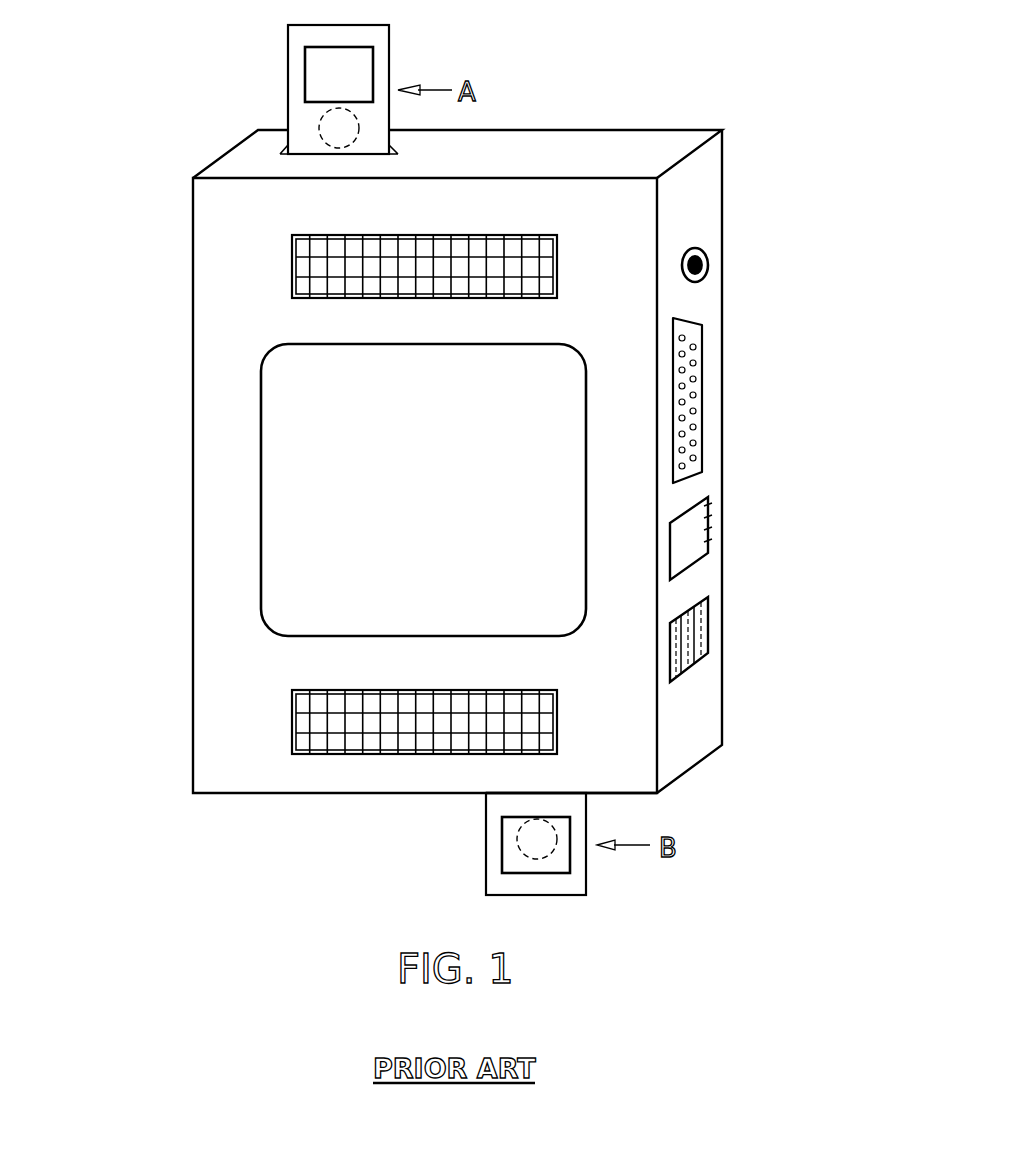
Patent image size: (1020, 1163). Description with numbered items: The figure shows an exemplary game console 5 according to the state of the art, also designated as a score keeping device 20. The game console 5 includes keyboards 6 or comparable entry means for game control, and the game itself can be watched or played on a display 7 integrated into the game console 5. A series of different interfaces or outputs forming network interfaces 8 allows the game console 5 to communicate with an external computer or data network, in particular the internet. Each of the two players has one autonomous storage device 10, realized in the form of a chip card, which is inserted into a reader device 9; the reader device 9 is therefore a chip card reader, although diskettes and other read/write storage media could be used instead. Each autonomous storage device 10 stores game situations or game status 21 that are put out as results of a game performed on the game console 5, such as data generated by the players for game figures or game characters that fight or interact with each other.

The game console 5 is at (408, 461).
The score keeping device 20 is at (198, 283).
The keyboard 6 is at (503, 246).
The display 7 is at (288, 577).
The network interface 8 is at (745, 235).
The reader device 9 is at (603, 805).
The autonomous storage device 10 is at (360, 57).
The game status 21 is at (322, 122).